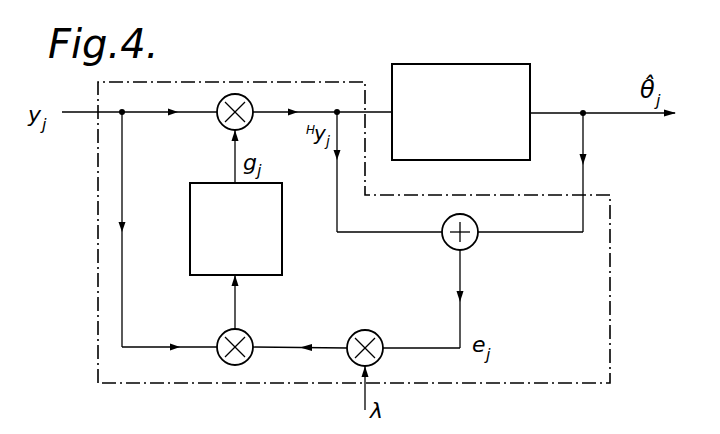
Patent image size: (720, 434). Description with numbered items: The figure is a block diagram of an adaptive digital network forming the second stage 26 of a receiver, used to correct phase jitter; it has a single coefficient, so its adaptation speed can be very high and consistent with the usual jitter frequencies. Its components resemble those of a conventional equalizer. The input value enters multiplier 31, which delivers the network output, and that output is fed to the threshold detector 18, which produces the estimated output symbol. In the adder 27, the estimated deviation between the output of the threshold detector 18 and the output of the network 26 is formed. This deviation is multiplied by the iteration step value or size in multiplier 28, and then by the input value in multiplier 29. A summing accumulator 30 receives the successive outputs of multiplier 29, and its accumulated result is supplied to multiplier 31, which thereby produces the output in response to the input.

The threshold detector 18 is at (460, 76).
The second stage 26 is at (611, 313).
The adder 27 is at (466, 238).
The multiplier 28 is at (372, 341).
The multiplier 29 is at (248, 340).
The summing accumulator 30 is at (213, 237).
The multiplier 31 is at (238, 100).